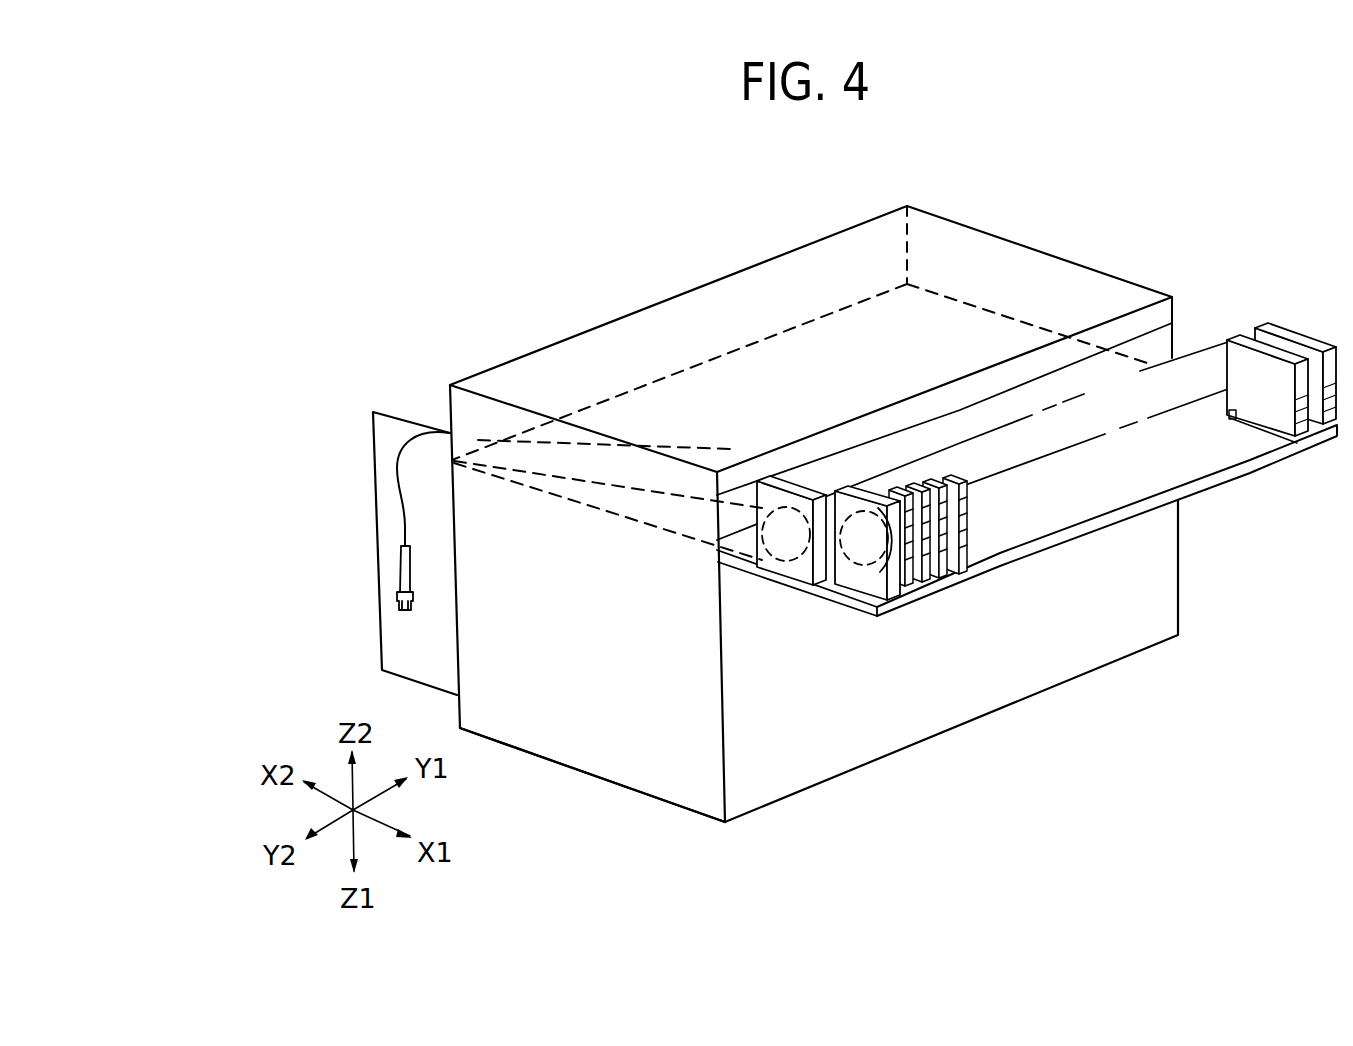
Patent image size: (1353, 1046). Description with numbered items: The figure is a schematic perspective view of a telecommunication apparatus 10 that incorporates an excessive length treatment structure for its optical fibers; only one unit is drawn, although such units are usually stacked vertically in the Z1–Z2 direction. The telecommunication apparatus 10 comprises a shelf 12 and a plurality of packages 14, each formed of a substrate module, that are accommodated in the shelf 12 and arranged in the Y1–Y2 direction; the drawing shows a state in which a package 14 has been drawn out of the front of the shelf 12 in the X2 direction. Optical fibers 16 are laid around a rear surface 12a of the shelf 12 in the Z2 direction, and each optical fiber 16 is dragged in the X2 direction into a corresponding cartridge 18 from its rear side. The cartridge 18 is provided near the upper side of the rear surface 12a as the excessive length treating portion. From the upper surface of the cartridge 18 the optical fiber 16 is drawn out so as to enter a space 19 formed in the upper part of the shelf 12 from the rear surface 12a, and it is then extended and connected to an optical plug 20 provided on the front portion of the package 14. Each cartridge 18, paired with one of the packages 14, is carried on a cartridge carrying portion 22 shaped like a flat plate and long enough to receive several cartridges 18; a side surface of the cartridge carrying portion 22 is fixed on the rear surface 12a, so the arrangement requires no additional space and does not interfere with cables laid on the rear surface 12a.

The telecommunication apparatus 10 is at (290, 219).
The shelf 12 is at (585, 753).
The rear surface 12a is at (745, 712).
The package 14 is at (395, 513).
The optical fiber 16 is at (889, 585).
The cartridge 18 is at (802, 572).
The space 19 is at (510, 422).
The optical plug 20 is at (393, 573).
The cartridge carrying portion 22 is at (960, 597).